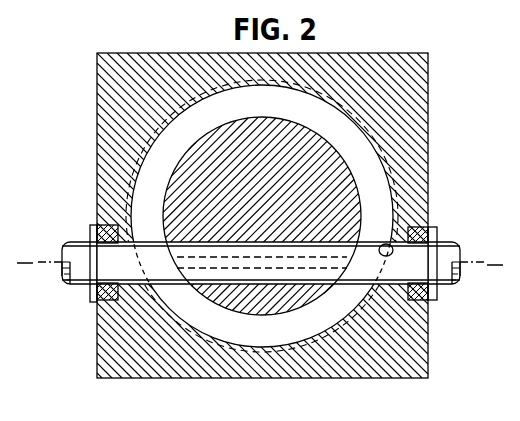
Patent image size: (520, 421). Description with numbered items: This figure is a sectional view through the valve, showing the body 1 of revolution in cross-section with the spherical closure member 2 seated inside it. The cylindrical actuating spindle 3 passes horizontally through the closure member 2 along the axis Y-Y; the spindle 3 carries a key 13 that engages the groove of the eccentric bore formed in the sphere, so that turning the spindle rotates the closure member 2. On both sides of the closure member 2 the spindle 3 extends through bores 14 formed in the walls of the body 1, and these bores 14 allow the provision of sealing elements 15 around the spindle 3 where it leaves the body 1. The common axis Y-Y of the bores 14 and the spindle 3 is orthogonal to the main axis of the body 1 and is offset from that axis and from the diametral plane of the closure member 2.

The body 1 is at (408, 92).
The closure member 2 is at (318, 168).
The actuating spindle 3 is at (114, 258).
The key 13 is at (292, 270).
The bores 14 is at (386, 244).
The sealing elements 15 is at (412, 233).